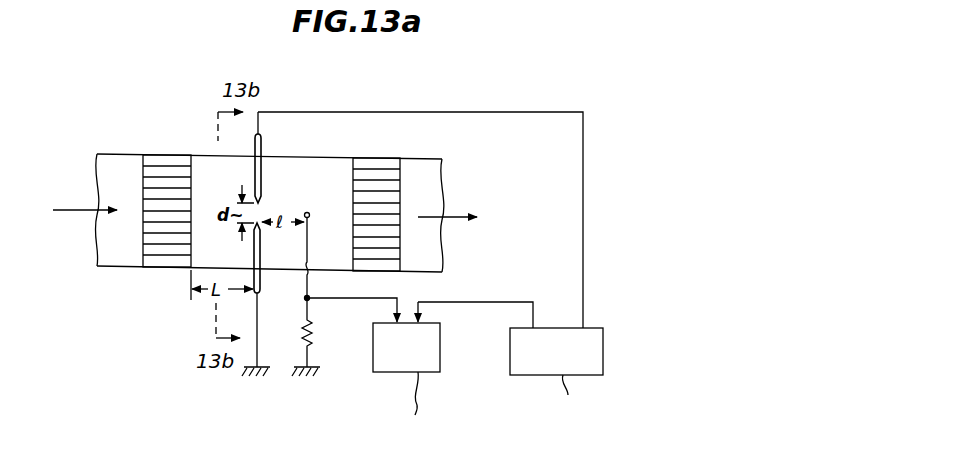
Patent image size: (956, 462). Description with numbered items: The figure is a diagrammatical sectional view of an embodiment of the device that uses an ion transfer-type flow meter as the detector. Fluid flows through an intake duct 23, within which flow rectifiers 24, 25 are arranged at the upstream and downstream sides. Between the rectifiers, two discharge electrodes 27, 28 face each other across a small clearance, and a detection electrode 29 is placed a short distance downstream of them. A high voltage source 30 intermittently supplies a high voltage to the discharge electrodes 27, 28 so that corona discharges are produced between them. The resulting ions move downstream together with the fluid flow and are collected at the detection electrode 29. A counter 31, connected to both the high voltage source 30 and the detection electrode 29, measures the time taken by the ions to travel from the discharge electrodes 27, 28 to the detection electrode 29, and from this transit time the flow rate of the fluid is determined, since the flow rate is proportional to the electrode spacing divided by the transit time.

The intake duct 23 is at (333, 157).
The flow rectifier 24 is at (142, 250).
The flow rectifier 25 is at (400, 183).
The discharge electrode 27 is at (233, 299).
The discharge electrode 28 is at (254, 184).
The detection electrode 29 is at (309, 213).
The high voltage source 30 is at (592, 358).
The counter 31 is at (435, 357).